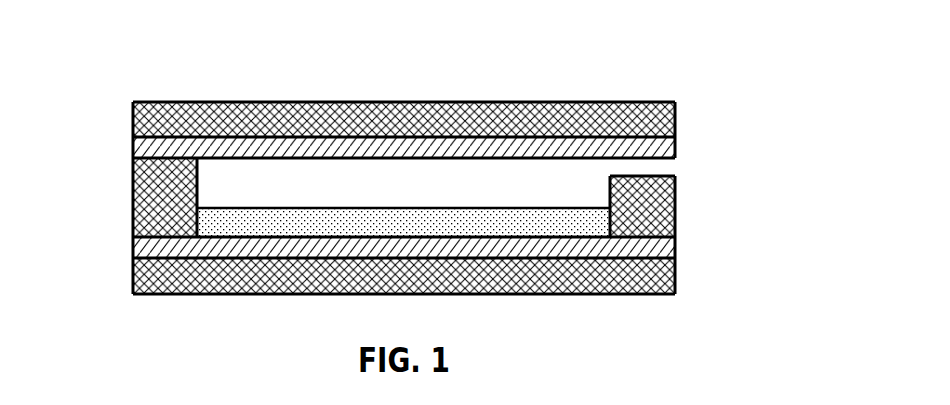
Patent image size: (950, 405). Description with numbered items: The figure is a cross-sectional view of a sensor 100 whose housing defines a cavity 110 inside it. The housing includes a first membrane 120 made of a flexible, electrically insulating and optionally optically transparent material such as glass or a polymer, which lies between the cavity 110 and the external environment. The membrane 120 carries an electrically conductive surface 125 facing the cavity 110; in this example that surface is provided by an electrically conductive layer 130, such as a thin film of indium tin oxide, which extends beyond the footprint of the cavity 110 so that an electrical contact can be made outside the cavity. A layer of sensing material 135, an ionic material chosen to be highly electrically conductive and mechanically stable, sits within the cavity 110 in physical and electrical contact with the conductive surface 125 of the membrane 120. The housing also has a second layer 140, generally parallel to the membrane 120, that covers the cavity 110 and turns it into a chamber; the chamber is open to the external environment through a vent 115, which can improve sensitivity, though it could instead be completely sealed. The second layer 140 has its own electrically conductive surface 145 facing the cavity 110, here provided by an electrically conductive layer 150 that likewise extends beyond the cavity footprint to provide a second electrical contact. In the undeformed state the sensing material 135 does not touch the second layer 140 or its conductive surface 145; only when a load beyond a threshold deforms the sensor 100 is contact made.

The sensor 100 is at (122, 86).
The cavity 110 is at (225, 194).
The vent 115 is at (660, 168).
The first membrane 120 is at (522, 295).
The electrically conductive surface 125 is at (337, 220).
The electrically conductive layer 130 is at (675, 246).
The sensing material 135 is at (535, 220).
The second layer 140 is at (520, 102).
The electrically conductive surface 145 is at (319, 168).
The electrically conductive layer 150 is at (675, 144).